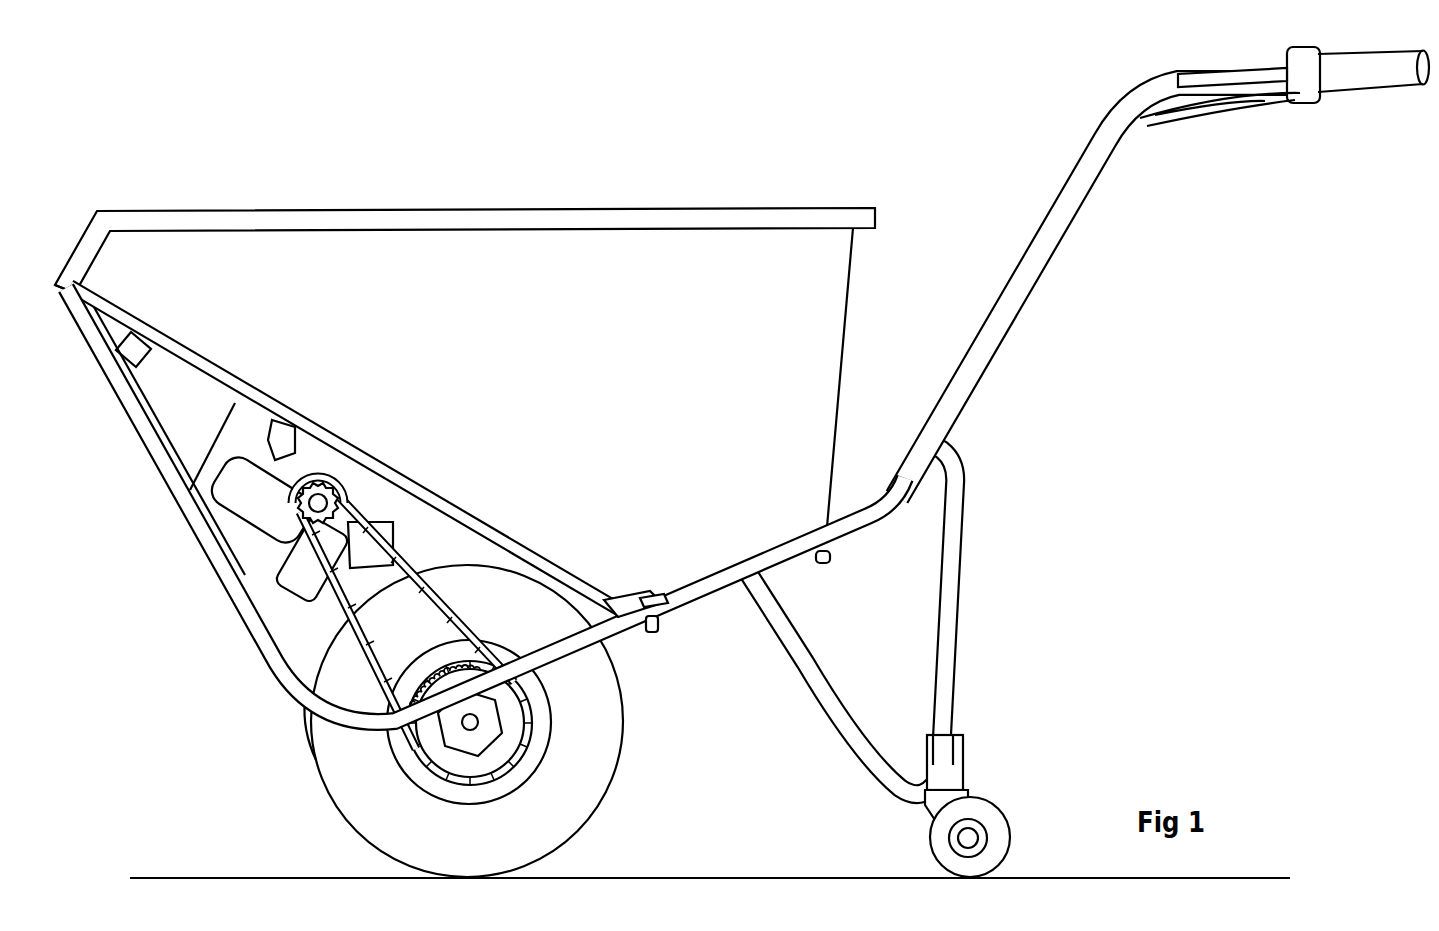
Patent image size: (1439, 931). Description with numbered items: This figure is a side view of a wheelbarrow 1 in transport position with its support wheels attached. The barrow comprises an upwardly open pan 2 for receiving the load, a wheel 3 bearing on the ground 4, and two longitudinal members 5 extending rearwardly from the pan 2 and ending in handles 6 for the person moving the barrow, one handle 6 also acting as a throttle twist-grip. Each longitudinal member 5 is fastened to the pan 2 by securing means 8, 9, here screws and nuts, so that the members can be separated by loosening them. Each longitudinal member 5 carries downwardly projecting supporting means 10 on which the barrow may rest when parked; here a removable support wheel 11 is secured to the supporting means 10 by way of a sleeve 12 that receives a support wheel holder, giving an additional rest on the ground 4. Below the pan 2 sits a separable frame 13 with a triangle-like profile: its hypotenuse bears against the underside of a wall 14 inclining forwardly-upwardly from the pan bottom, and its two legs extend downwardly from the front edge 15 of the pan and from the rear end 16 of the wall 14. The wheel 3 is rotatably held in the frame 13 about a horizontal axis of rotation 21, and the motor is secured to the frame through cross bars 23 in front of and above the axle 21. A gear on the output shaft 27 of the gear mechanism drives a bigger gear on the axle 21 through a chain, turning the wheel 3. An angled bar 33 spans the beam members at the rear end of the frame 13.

The wheelbarrow 1 is at (845, 207).
The pan 2 is at (480, 255).
The wheel 3 is at (603, 795).
The ground 4 is at (755, 878).
The longitudinal member 5 is at (1012, 318).
The handle 6 is at (1365, 82).
The securing means 8 is at (830, 560).
The securing means 9 is at (656, 630).
The supporting means 10 is at (960, 628).
The support wheel 11 is at (1000, 820).
The sleeve 12 is at (967, 757).
The frame 13 is at (240, 611).
The wall 14 is at (232, 372).
The front edge 15 is at (60, 297).
The rear end 16 is at (620, 598).
The axis of rotation 21 is at (478, 730).
The cross bar 23 is at (316, 452).
The output shaft 27 is at (324, 498).
The angled bar 33 is at (655, 597).